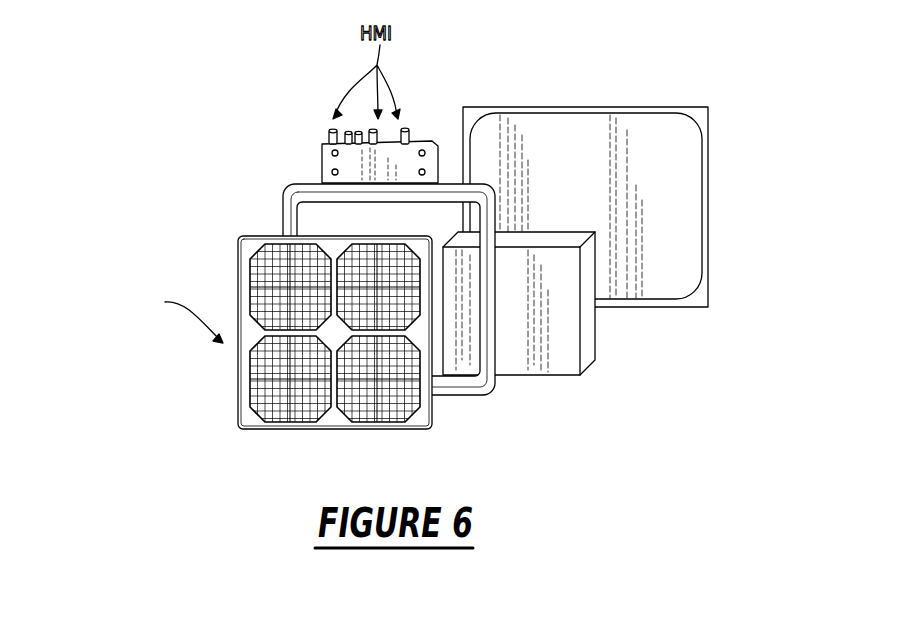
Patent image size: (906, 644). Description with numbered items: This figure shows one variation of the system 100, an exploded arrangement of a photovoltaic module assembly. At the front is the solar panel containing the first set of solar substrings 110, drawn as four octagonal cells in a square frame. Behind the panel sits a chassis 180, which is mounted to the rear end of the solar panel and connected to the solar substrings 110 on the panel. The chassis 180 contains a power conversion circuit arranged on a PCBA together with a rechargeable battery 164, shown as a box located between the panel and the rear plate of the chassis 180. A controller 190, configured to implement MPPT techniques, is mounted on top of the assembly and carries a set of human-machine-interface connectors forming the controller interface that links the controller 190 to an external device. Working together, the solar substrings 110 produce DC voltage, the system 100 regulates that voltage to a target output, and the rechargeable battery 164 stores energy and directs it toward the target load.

The system 100 is at (127, 74).
The first set of solar substrings 110 is at (252, 419).
The rechargeable battery 164 is at (568, 340).
The chassis 180 is at (690, 143).
The controller 190 is at (428, 119).